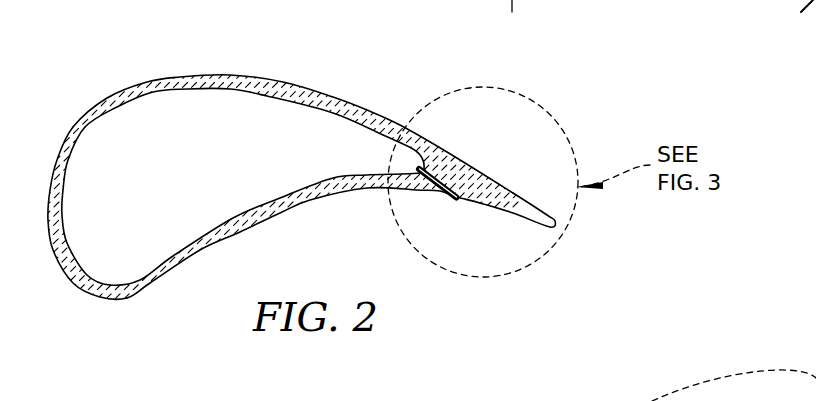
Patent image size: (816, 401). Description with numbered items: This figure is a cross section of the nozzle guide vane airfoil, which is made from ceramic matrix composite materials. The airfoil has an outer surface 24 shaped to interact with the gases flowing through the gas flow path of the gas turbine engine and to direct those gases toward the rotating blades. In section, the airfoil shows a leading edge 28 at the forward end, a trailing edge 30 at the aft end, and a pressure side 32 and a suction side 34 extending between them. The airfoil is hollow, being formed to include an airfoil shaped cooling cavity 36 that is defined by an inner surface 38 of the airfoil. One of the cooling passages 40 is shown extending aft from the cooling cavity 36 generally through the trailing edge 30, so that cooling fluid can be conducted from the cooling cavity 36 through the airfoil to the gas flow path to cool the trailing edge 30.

The outer surface 24 is at (165, 77).
The leading edge 28 is at (84, 295).
The trailing edge 30 is at (548, 229).
The pressure side 32 is at (322, 203).
The suction side 34 is at (308, 84).
The cooling cavity 36 is at (231, 112).
The inner surface 38 is at (67, 183).
The cooling passage 40 is at (450, 200).